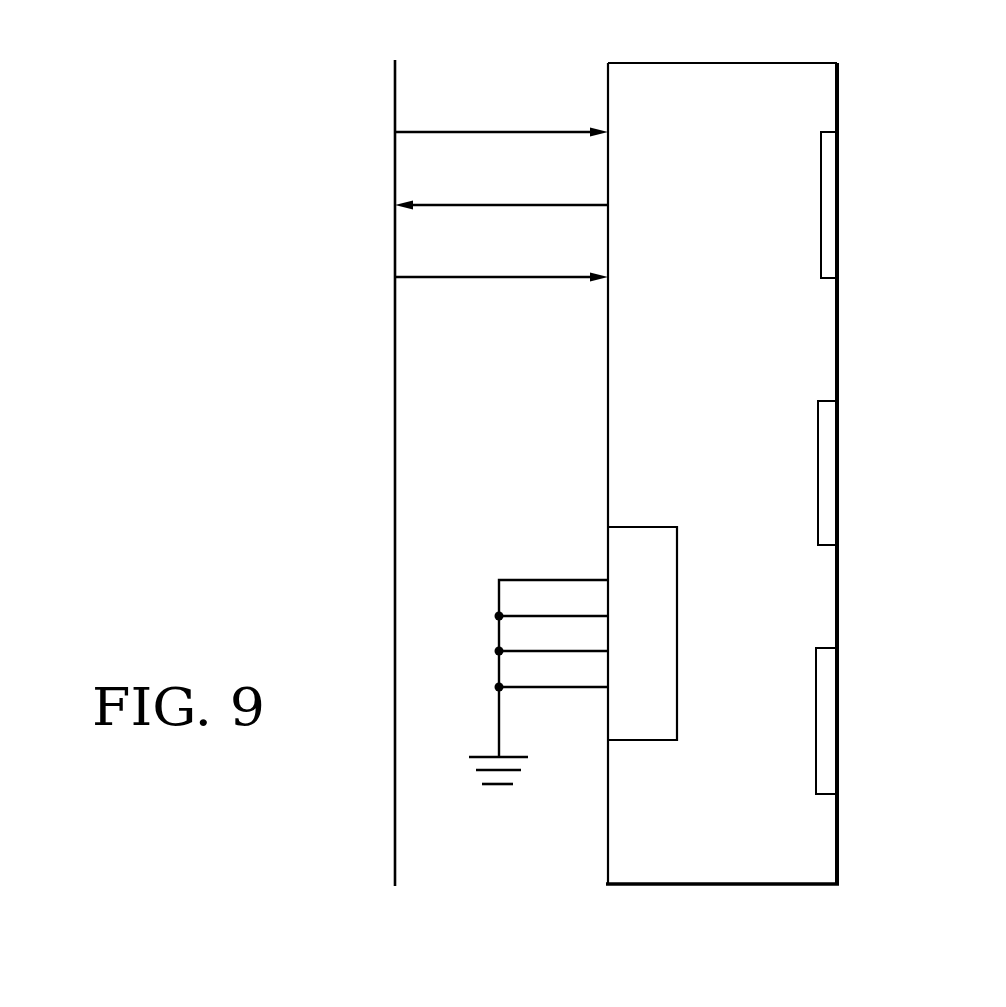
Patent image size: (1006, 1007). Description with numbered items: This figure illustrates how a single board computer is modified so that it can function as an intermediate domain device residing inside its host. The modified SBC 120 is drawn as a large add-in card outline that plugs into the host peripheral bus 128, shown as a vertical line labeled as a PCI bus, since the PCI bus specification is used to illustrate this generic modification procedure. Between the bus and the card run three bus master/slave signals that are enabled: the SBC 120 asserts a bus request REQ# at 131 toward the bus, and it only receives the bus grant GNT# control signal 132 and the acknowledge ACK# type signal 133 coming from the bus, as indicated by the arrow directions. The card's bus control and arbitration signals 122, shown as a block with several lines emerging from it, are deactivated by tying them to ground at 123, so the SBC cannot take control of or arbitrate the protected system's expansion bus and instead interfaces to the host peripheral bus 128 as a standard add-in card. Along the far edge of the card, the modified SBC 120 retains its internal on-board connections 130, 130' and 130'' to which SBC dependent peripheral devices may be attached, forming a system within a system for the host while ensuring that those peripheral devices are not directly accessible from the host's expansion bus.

The single board computer (SBC) 120 is at (751, 331).
The bus control and arbitration signals 122 is at (657, 660).
The grounding 123 is at (496, 793).
The host peripheral bus 128 is at (393, 439).
The internal/on-board connection 130 is at (888, 205).
The internal/on-board connection 130' is at (886, 473).
The internal/on-board connection 130'' is at (886, 721).
The REQ# bus request signal 131 is at (467, 203).
The GNT# bus grant control signal 132 is at (493, 280).
The ACK# acknowledge signal 133 is at (442, 132).